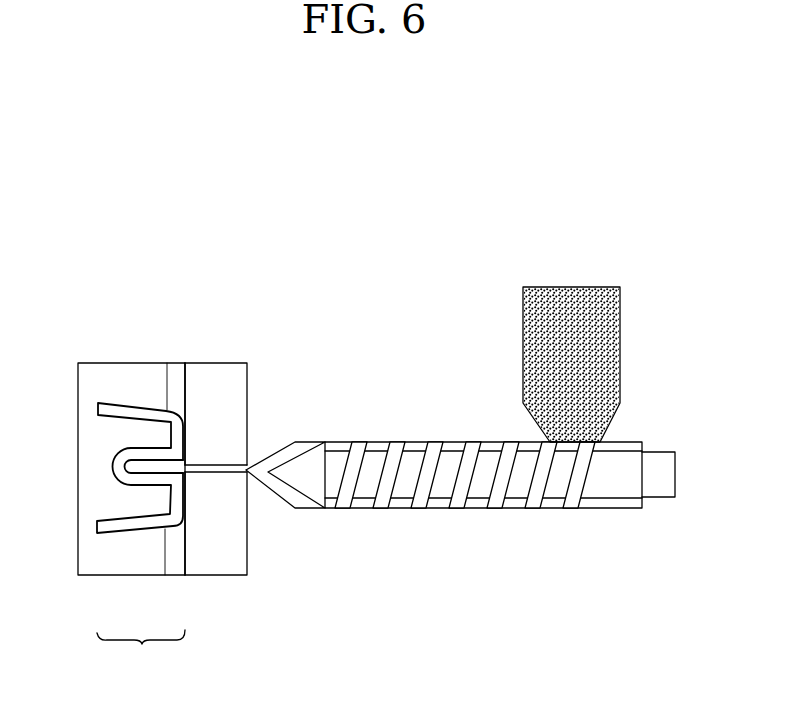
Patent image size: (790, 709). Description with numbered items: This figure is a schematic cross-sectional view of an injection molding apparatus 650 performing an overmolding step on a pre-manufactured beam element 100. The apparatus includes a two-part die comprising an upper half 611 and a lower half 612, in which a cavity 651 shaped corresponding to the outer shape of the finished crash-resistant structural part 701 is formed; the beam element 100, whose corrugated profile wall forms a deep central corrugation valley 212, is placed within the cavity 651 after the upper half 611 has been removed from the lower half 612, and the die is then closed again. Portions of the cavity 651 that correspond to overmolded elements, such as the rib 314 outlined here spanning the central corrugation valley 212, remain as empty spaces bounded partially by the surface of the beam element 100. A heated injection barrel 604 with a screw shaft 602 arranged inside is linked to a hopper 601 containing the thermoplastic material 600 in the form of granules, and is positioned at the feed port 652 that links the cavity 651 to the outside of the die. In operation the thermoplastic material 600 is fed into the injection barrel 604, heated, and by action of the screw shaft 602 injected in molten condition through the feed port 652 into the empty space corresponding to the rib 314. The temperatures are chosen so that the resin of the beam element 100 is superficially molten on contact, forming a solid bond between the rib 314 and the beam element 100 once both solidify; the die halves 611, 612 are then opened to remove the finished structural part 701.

The beam element 100 is at (138, 530).
The central corrugation valley 212 is at (192, 460).
The rib 314 is at (152, 473).
The thermoplastic material 600 is at (573, 353).
The hopper 601 is at (620, 337).
The screw shaft 602 is at (653, 498).
The heated injection barrel 604 is at (338, 442).
The upper half 611 is at (222, 362).
The lower half 612 is at (118, 362).
The injection molding apparatus 650 is at (456, 471).
The cavity 651 is at (185, 505).
The nozzle 652 is at (232, 476).
The crash-resistant structural part 701 is at (141, 652).